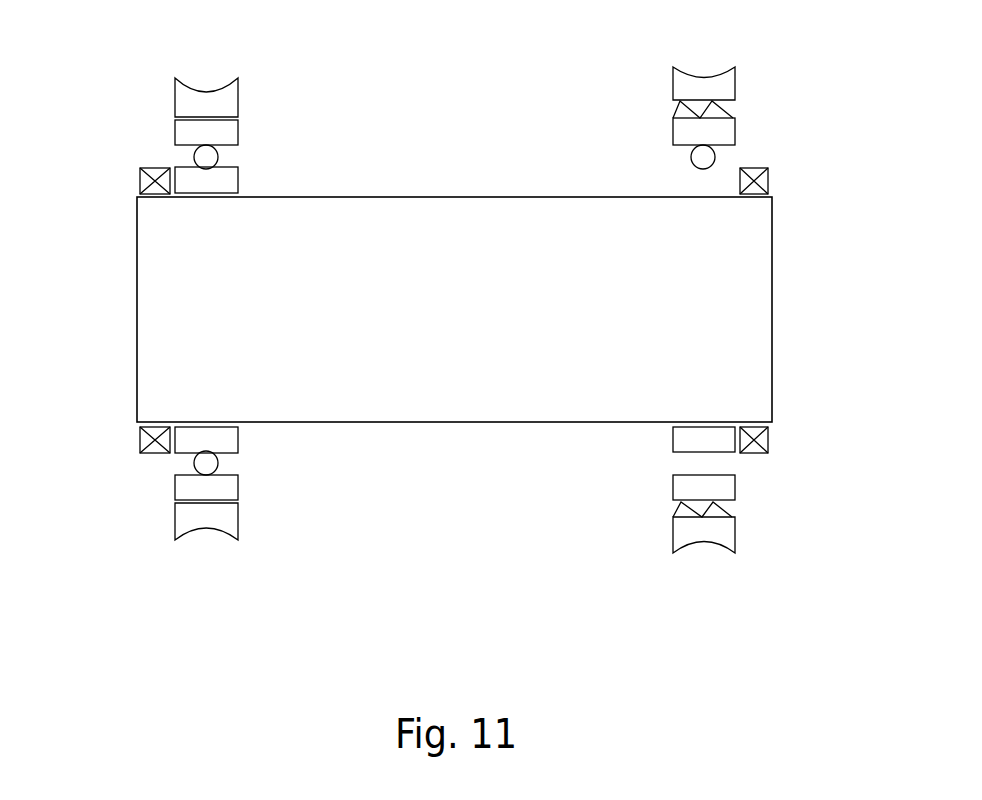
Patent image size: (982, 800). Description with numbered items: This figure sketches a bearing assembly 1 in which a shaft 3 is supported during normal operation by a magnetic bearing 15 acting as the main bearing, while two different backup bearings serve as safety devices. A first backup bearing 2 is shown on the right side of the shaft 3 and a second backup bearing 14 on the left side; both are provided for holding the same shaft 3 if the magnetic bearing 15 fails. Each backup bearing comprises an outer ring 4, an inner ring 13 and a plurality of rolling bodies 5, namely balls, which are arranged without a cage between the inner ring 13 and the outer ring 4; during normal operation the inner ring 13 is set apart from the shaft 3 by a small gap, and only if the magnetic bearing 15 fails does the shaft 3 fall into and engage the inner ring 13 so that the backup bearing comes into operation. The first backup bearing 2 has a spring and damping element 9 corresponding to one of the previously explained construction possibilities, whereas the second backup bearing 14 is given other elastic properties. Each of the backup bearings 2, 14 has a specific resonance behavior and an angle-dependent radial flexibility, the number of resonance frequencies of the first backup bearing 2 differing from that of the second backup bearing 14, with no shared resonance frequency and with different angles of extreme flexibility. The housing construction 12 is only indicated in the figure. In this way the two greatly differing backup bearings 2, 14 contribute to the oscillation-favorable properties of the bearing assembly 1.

The bearing assembly 1 is at (780, 72).
The backup bearing 2 is at (622, 77).
The shaft 3 is at (461, 323).
The outer ring 4 is at (238, 484).
The rolling bodies 5 is at (218, 157).
The spring and damping element 9 is at (735, 108).
The housing construction 12 is at (238, 97).
The inner ring 13 is at (238, 175).
The second backup bearing 14 is at (373, 75).
The magnetic bearing 15 is at (140, 175).